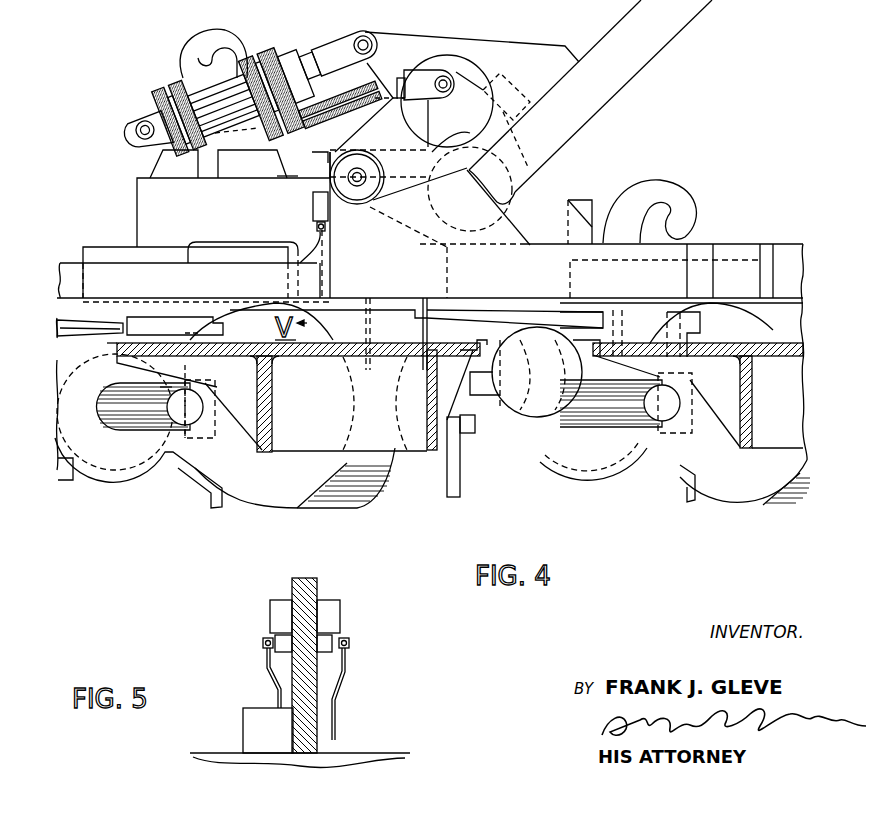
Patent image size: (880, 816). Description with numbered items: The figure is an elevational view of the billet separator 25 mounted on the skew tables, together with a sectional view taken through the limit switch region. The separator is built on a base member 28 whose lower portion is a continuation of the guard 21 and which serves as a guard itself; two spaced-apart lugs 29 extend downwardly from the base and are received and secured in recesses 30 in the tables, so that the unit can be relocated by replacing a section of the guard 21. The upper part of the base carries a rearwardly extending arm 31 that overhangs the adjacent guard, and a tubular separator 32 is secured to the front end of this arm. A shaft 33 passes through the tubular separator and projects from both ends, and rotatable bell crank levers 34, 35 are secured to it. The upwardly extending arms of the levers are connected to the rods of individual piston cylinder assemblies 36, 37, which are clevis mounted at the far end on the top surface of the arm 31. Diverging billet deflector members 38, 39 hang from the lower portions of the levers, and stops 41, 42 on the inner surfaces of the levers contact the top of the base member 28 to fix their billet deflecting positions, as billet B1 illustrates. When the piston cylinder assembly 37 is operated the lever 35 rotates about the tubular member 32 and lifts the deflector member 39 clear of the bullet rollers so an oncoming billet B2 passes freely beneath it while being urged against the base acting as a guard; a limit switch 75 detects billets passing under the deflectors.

In FIG. 4, the guard 21 is at (103, 248).
In FIG. 4, the billet separator 25 is at (470, 42).
In FIG. 4, the base member 28 is at (490, 290).
In FIG. 5, the base member 28 is at (310, 588).
In FIG. 4, the lugs 29 is at (383, 304).
In FIG. 4, the recesses 30 is at (366, 300).
In FIG. 4, the rearwardly extending arm 31 is at (256, 215).
In FIG. 4, the tubular separator 32 is at (340, 156).
In FIG. 4, the shaft 33 is at (357, 188).
In FIG. 4, the bell crank lever 34 is at (421, 225).
In FIG. 4, the bell crank lever 35 is at (415, 175).
In FIG. 4, the piston cylinder assembly 36 is at (307, 143).
In FIG. 4, the piston cylinder assembly 37 is at (286, 56).
In FIG. 4, the billet deflector member 38 is at (548, 223).
In FIG. 4, the billet deflector member 39 is at (641, 56).
In FIG. 4, the stop 41 is at (580, 205).
In FIG. 4, the stop 42 is at (512, 104).
In FIG. 4, the limit switch 75 is at (313, 200).
In FIG. 5, the limit switch 75 is at (270, 613).
In FIG. 4, the billet B1 is at (698, 258).
In FIG. 4, the billet B2 is at (180, 294).
In FIG. 5, the billet B2 is at (281, 739).